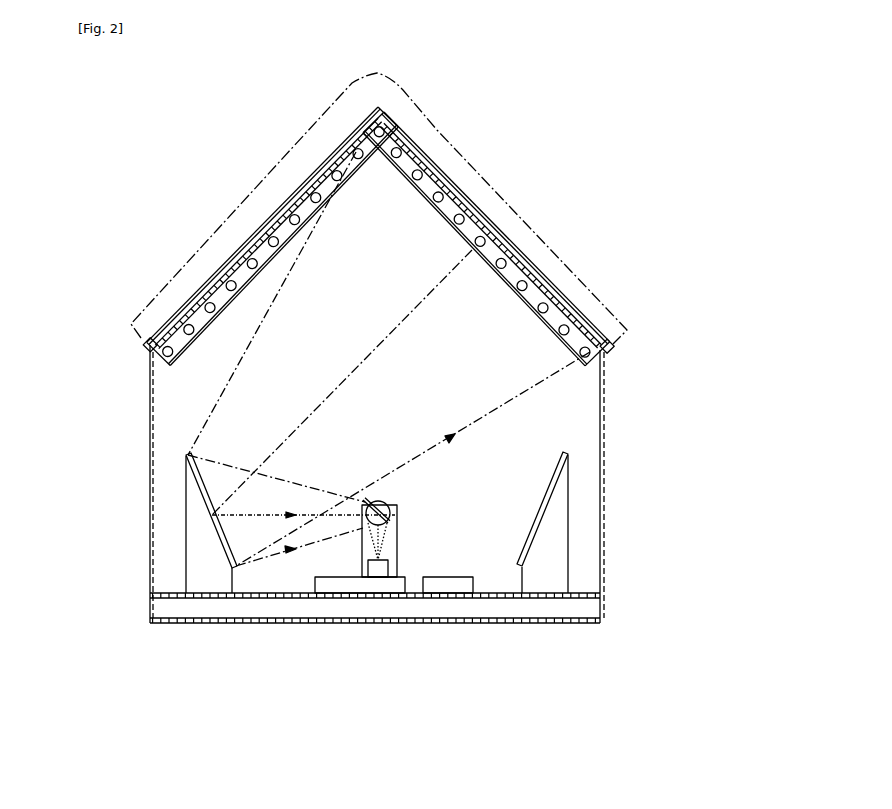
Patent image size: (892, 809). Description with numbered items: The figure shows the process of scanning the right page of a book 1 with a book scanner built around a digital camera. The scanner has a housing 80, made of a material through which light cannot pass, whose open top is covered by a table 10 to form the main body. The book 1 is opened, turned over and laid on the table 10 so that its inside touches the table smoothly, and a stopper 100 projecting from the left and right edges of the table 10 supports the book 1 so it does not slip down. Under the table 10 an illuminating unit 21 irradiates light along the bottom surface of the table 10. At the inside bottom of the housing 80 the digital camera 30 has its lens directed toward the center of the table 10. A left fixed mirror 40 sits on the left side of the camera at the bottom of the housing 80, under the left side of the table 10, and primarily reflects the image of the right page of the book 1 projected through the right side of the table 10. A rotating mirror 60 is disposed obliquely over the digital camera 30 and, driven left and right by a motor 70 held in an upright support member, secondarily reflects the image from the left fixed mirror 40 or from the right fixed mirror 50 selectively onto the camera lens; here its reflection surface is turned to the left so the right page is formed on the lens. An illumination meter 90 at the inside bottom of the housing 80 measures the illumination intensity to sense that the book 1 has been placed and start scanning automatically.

The book 1 is at (505, 166).
The table 10 is at (335, 150).
The illuminating unit 21 is at (400, 147).
The stopper 100 is at (143, 348).
The housing 80 is at (148, 516).
The left fixed mirror 40 is at (222, 550).
The right fixed mirror 50 is at (515, 568).
The digital camera 30 is at (348, 585).
The illumination meter 90 is at (440, 588).
The rotating mirror 60 is at (393, 513).
The motor 70 is at (366, 500).